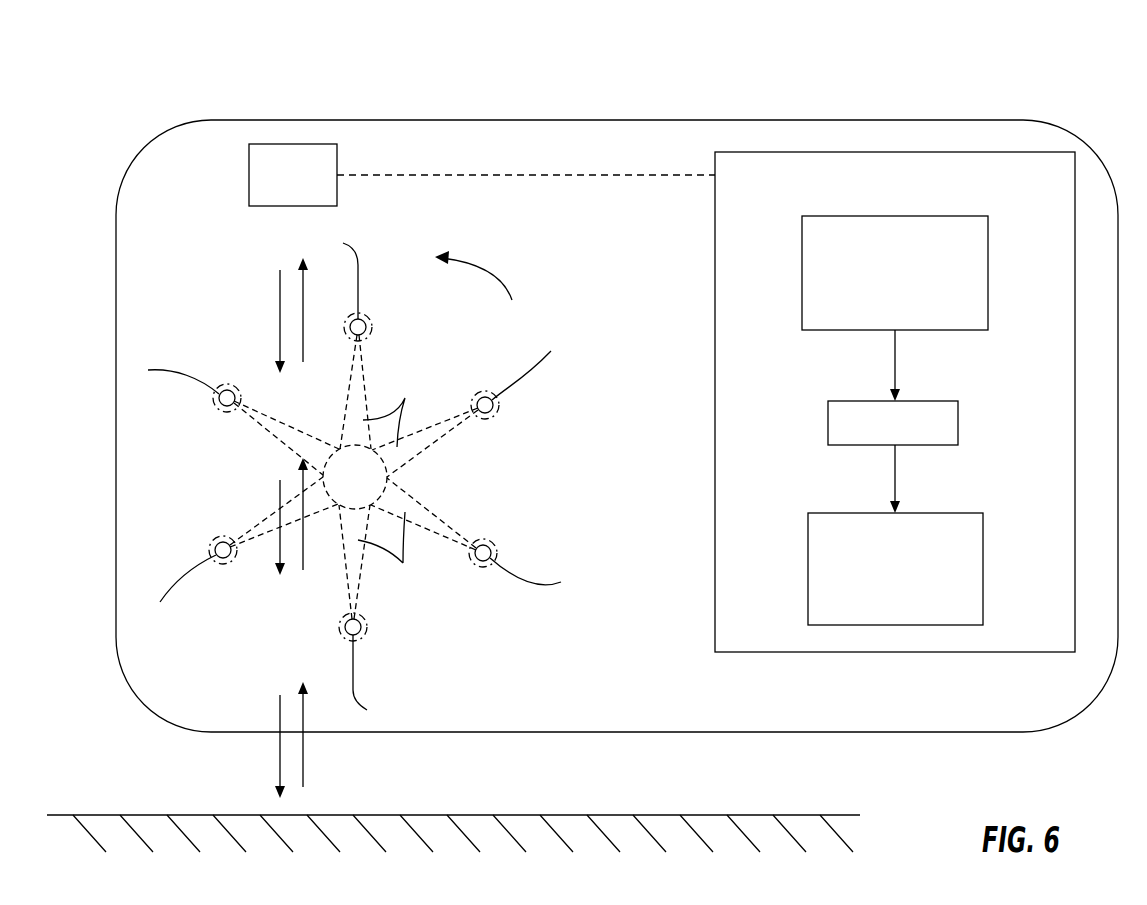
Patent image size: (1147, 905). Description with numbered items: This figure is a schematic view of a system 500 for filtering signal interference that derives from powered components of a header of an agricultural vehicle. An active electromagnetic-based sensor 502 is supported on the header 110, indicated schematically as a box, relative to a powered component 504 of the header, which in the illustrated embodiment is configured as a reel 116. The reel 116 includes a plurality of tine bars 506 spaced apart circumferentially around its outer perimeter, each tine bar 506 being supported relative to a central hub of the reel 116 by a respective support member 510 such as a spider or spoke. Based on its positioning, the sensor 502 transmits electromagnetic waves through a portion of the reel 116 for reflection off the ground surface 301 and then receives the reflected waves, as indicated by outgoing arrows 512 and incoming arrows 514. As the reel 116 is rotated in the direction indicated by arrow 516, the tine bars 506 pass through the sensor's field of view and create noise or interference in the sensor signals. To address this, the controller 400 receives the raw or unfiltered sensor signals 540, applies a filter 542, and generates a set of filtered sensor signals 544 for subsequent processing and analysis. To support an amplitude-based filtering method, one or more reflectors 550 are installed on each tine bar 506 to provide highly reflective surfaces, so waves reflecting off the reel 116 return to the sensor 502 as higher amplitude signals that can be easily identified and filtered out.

The header 110 is at (140, 136).
The system 500 is at (957, 58).
The controller 400 is at (1003, 145).
The active electromagnetic-based sensor 502 is at (482, 175).
The ground surface 301 is at (136, 815).
The outgoing arrows 512 is at (280, 317).
The incoming arrows 514 is at (303, 308).
The arrow indicating rotational direction 516 is at (490, 262).
The reel 116 is at (546, 460).
The powered component 504 is at (427, 476).
The tine bar 506 is at (366, 333).
The support member 510 is at (400, 490).
The reflector 550 is at (378, 318).
The box for unfiltered sensor signals 540 is at (988, 280).
The filter 542 is at (958, 422).
The box for filtered sensor signals 544 is at (983, 563).